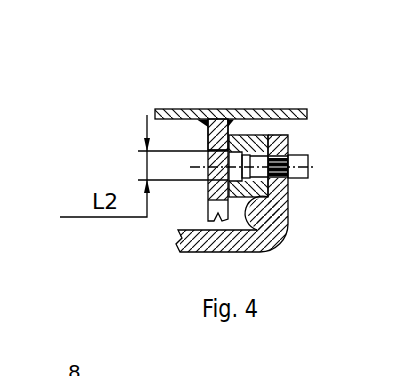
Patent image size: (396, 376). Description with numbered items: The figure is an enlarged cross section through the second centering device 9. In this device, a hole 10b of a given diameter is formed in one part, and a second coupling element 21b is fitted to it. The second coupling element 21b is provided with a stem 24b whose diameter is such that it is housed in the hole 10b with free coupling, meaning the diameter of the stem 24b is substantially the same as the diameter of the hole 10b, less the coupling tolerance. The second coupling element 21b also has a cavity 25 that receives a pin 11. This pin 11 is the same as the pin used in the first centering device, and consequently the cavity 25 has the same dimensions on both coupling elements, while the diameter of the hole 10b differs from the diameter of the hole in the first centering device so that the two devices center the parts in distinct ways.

The second centering device 9 is at (112, 84).
The hole 10b is at (212, 177).
The pin 11 is at (297, 155).
The second coupling element 21b is at (248, 220).
The stem 24b is at (208, 152).
The cavity 25 is at (262, 148).